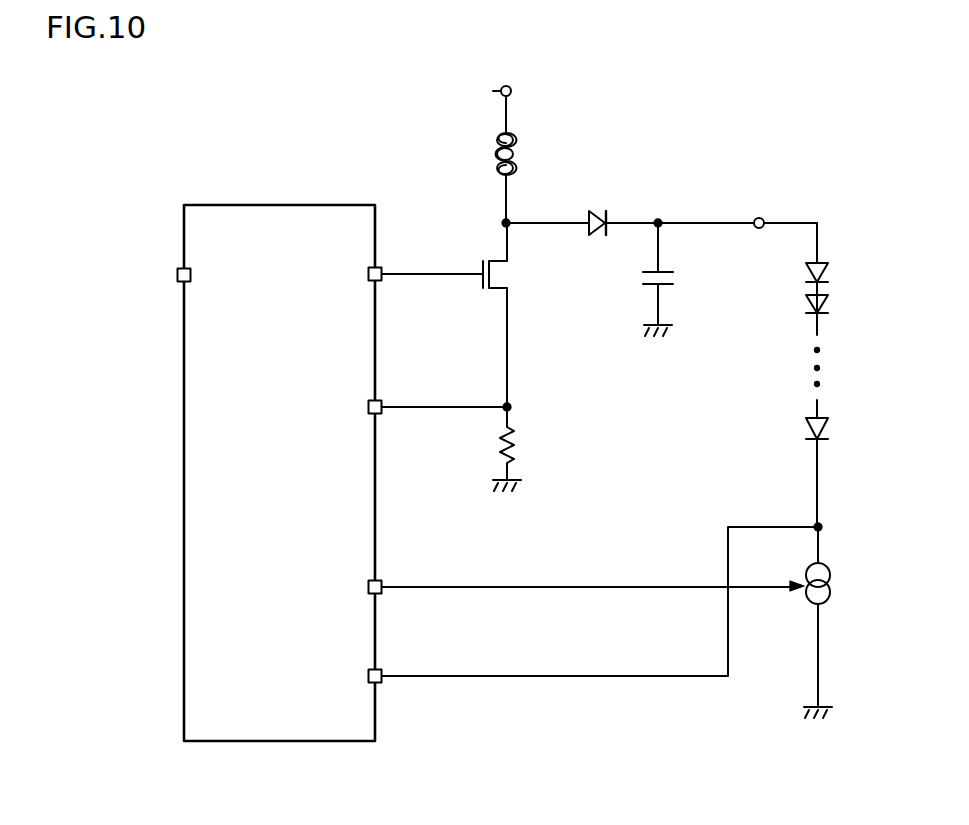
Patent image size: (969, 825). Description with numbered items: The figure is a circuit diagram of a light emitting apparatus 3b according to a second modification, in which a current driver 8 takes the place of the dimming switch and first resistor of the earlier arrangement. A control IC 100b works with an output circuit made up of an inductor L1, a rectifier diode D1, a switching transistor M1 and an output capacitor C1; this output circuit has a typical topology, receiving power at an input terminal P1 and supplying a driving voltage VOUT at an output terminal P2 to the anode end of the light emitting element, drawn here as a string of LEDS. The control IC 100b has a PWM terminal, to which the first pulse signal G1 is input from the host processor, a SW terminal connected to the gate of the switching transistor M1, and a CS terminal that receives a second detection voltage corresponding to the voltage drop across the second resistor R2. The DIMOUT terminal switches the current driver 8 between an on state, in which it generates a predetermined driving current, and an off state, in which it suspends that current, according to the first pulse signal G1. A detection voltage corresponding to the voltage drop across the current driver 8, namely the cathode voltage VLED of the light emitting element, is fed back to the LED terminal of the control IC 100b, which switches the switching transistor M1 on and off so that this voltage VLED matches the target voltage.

The control IC 100b is at (276, 205).
The first pulse signal G1 is at (166, 277).
The PWM terminal PWM is at (180, 268).
The switching terminal SW is at (381, 268).
The current detection terminal CS is at (381, 402).
The dimming output terminal DIMOUT is at (382, 580).
The LED terminal LED is at (382, 669).
The cathode voltage VLED is at (779, 512).
The switching transistor M1 is at (512, 277).
The second resistor R2 is at (516, 445).
The input terminal P1 is at (513, 91).
The inductor L1 is at (514, 157).
The rectifier diode D1 is at (598, 209).
The output capacitor C1 is at (676, 278).
The output terminal P2 is at (759, 229).
The driving voltage VOUT is at (765, 201).
The LED string LEDS is at (817, 375).
The current driver 8 is at (834, 586).
The light emitting apparatus 3b is at (512, 809).